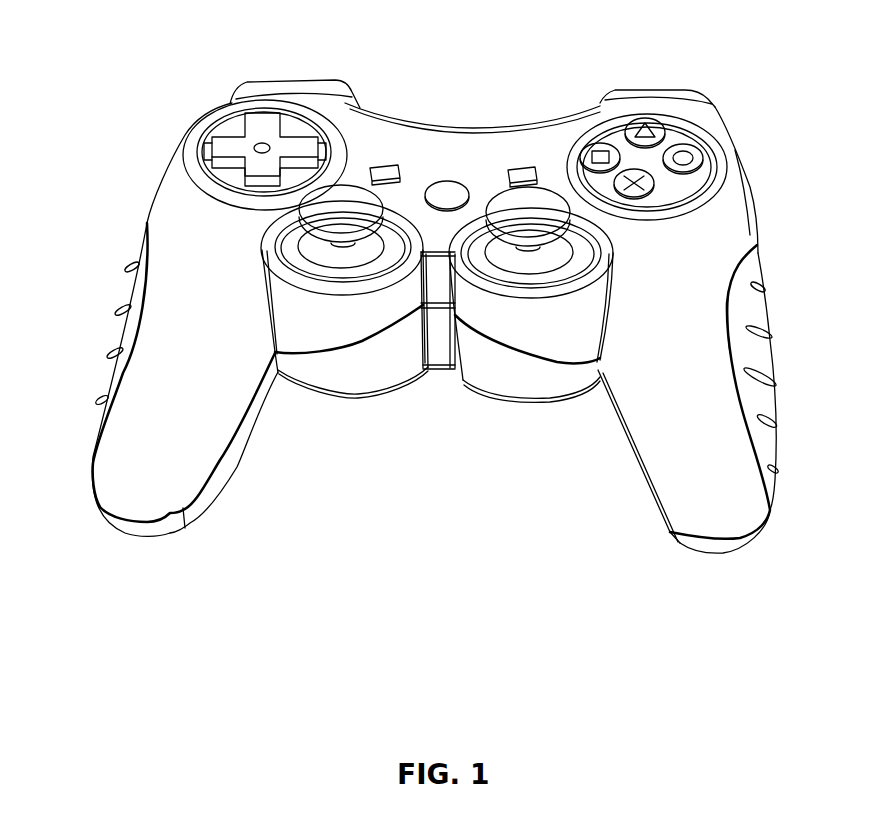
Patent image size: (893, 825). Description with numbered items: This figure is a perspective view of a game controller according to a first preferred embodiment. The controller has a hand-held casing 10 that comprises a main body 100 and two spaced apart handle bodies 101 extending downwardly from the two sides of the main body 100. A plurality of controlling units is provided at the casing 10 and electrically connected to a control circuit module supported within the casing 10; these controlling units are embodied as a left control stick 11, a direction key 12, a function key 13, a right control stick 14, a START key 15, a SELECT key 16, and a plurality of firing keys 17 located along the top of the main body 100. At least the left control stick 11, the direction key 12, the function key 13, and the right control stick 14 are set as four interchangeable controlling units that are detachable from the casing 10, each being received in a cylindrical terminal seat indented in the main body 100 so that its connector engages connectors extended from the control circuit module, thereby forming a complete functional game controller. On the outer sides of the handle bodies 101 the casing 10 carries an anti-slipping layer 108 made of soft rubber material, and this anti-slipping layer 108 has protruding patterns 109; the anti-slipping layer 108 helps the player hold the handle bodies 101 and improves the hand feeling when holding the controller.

The main body 100 is at (440, 154).
The casing 10 is at (757, 203).
The firing keys 17 is at (296, 88).
The direction key 12 is at (205, 146).
The function key 13 is at (677, 140).
The SELECT key 16 is at (384, 165).
The START key 15 is at (520, 167).
The left control stick 11 is at (287, 226).
The right control stick 14 is at (513, 277).
The handle bodies 101 is at (127, 479).
The anti-slipping layer 108 is at (115, 382).
The protruding patterns 109 is at (123, 307).